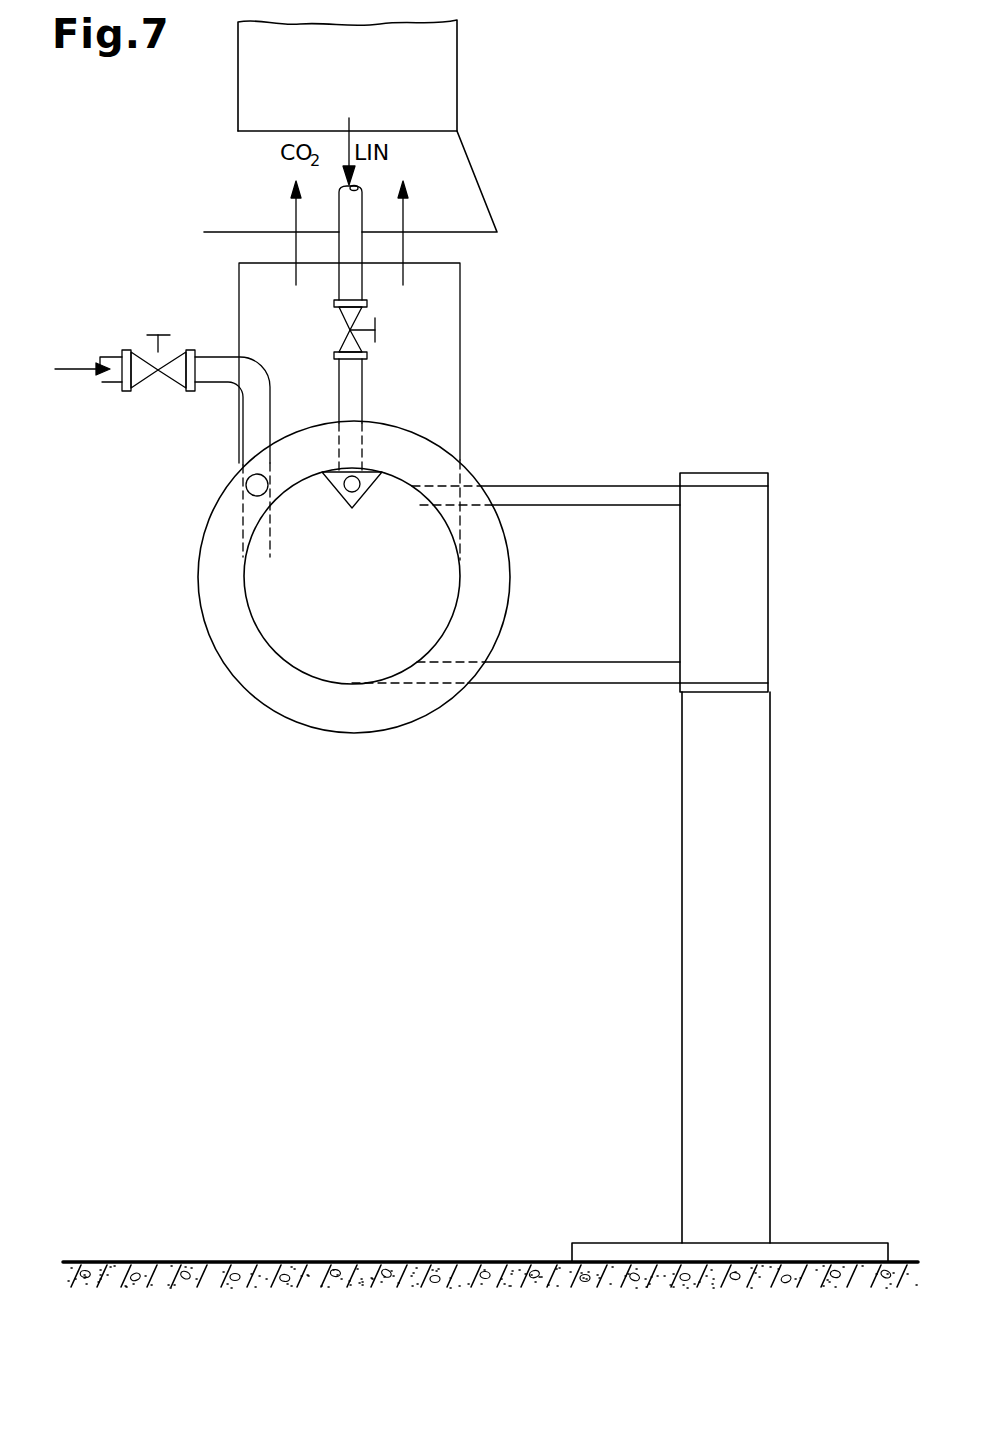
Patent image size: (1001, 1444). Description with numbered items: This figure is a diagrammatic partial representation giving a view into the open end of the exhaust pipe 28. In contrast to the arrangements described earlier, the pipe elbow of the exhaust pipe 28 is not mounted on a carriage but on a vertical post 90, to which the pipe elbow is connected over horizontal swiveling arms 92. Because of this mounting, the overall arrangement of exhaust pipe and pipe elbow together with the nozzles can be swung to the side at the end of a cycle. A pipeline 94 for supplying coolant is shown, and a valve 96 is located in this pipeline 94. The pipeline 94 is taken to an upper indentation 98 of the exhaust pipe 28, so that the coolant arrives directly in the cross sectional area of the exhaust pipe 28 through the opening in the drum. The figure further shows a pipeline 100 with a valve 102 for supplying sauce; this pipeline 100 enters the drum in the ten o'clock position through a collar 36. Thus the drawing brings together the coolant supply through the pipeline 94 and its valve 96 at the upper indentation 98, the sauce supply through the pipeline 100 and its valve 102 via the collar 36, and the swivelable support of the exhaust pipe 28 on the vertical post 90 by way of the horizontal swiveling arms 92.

The exhaust pipe 28 is at (318, 668).
The collar 36 is at (240, 667).
The vertical post 90 is at (690, 948).
The horizontal swiveling arms 92 is at (595, 497).
The pipeline for supplying coolant 94 is at (360, 388).
The valve 96 is at (343, 343).
The upper indentation 98 is at (372, 482).
The pipeline for supplying sauce 100 is at (247, 437).
The valve 102 is at (175, 374).